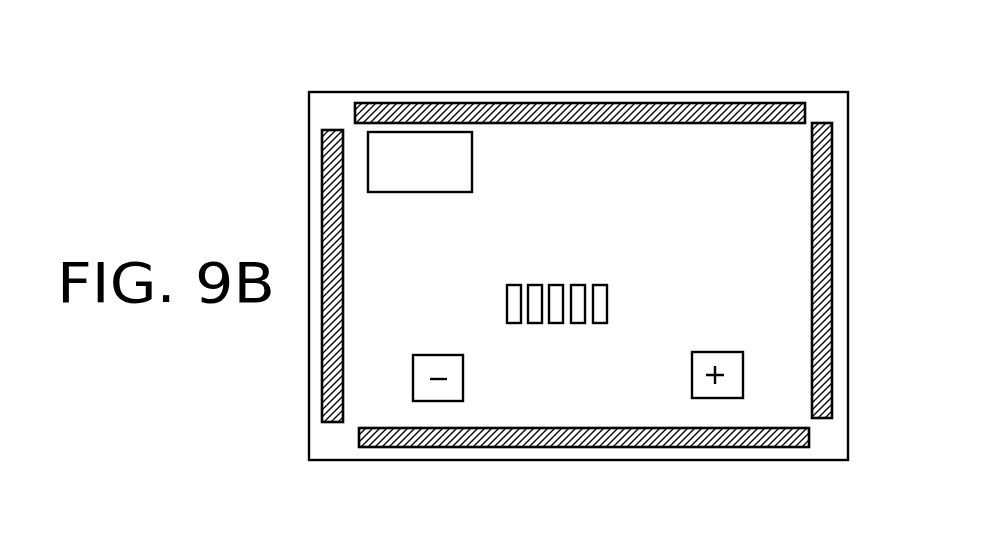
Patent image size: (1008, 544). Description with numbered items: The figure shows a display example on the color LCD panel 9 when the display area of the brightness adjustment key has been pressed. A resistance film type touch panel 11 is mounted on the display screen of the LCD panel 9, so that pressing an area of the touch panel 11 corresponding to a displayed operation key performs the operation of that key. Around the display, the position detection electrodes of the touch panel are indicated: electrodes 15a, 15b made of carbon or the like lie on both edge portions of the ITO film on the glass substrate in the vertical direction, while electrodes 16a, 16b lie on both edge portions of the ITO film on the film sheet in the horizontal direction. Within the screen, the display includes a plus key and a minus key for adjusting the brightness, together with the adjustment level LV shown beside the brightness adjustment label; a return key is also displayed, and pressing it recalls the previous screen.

The color LCD panel 9 is at (708, 92).
The resistance film type touch panel 11 is at (564, 148).
The electrode 15a is at (428, 103).
The electrode 15b is at (435, 447).
The electrode 16a is at (331, 130).
The electrode 16b is at (832, 271).
The adjustment level LV is at (545, 346).